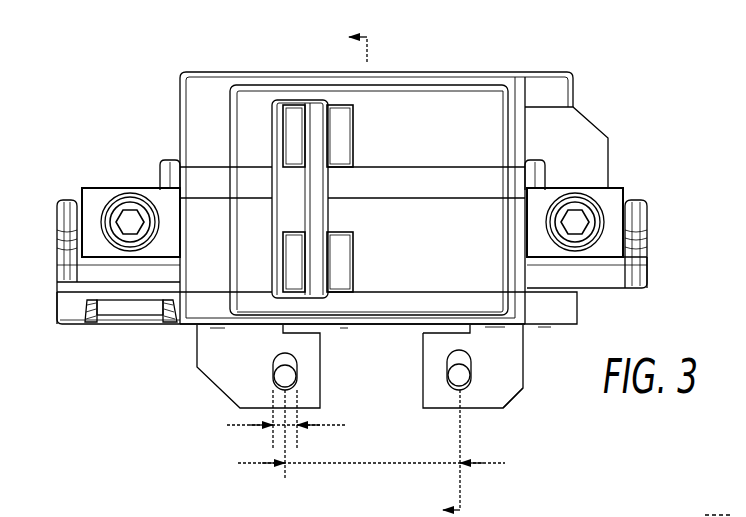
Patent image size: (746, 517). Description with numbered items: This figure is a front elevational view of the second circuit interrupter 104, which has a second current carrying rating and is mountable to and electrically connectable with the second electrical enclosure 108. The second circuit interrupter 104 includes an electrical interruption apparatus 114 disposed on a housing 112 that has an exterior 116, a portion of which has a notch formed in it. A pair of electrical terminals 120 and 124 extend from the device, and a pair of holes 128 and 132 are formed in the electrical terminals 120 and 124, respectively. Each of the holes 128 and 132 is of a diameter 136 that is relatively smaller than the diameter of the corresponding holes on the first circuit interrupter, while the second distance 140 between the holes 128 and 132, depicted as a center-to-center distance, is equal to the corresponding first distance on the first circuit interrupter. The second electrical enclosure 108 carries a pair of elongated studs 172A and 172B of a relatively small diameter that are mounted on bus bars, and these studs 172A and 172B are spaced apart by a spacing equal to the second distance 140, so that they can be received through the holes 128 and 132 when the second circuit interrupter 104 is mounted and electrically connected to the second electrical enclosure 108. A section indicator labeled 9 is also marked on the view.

The section line 9- 9 is at (418, 268).
The second circuit interrupter 104 is at (597, 100).
The second electrical enclosure 108 is at (641, 516).
The housing 112 is at (611, 155).
The electrical interruption apparatus 114 is at (515, 405).
The exterior 116 is at (433, 72).
The electrical terminal 120 is at (197, 340).
The electrical terminal 124 is at (525, 340).
The hole 128 is at (280, 383).
The hole 132 is at (472, 380).
The diameter 136 is at (240, 428).
The second distance 140 is at (386, 463).
The stud 172A is at (280, 367).
The stud 172B is at (457, 363).